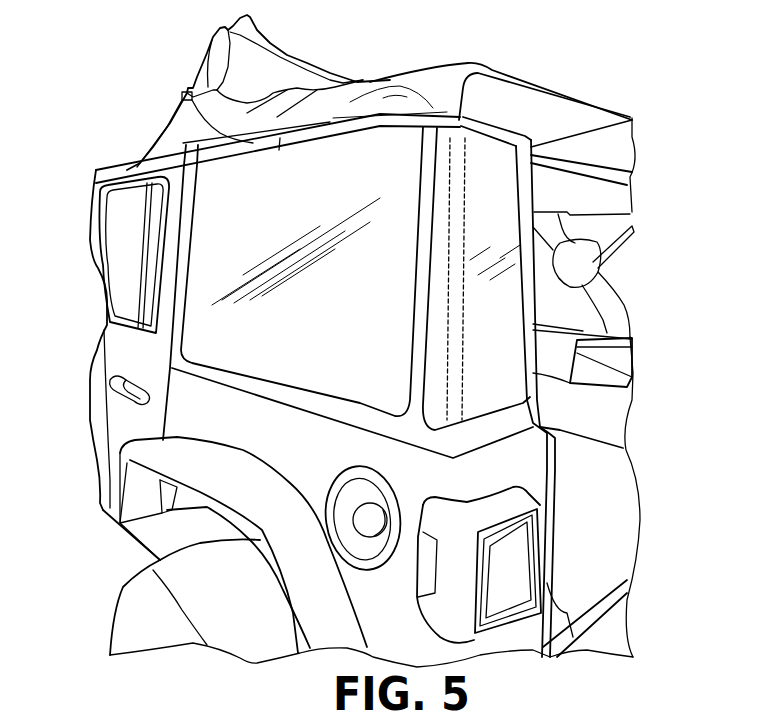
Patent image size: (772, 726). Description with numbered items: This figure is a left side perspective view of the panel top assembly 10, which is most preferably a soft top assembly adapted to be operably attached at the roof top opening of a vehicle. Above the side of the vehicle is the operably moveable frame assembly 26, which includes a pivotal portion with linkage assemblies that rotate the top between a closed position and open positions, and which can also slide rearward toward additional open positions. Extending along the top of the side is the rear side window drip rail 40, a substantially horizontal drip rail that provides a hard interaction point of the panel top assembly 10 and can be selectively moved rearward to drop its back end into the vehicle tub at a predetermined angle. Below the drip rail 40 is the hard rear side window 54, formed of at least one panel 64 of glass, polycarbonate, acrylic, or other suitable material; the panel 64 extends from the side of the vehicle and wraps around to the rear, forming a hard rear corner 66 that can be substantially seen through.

The panel top assembly 10 is at (586, 58).
The moveable frame assembly 26 is at (150, 100).
The rear side window drip rail 40 is at (331, 130).
The hard rear side window 54 is at (252, 405).
The panel 64 is at (313, 329).
The hard rear corner 66 is at (497, 343).